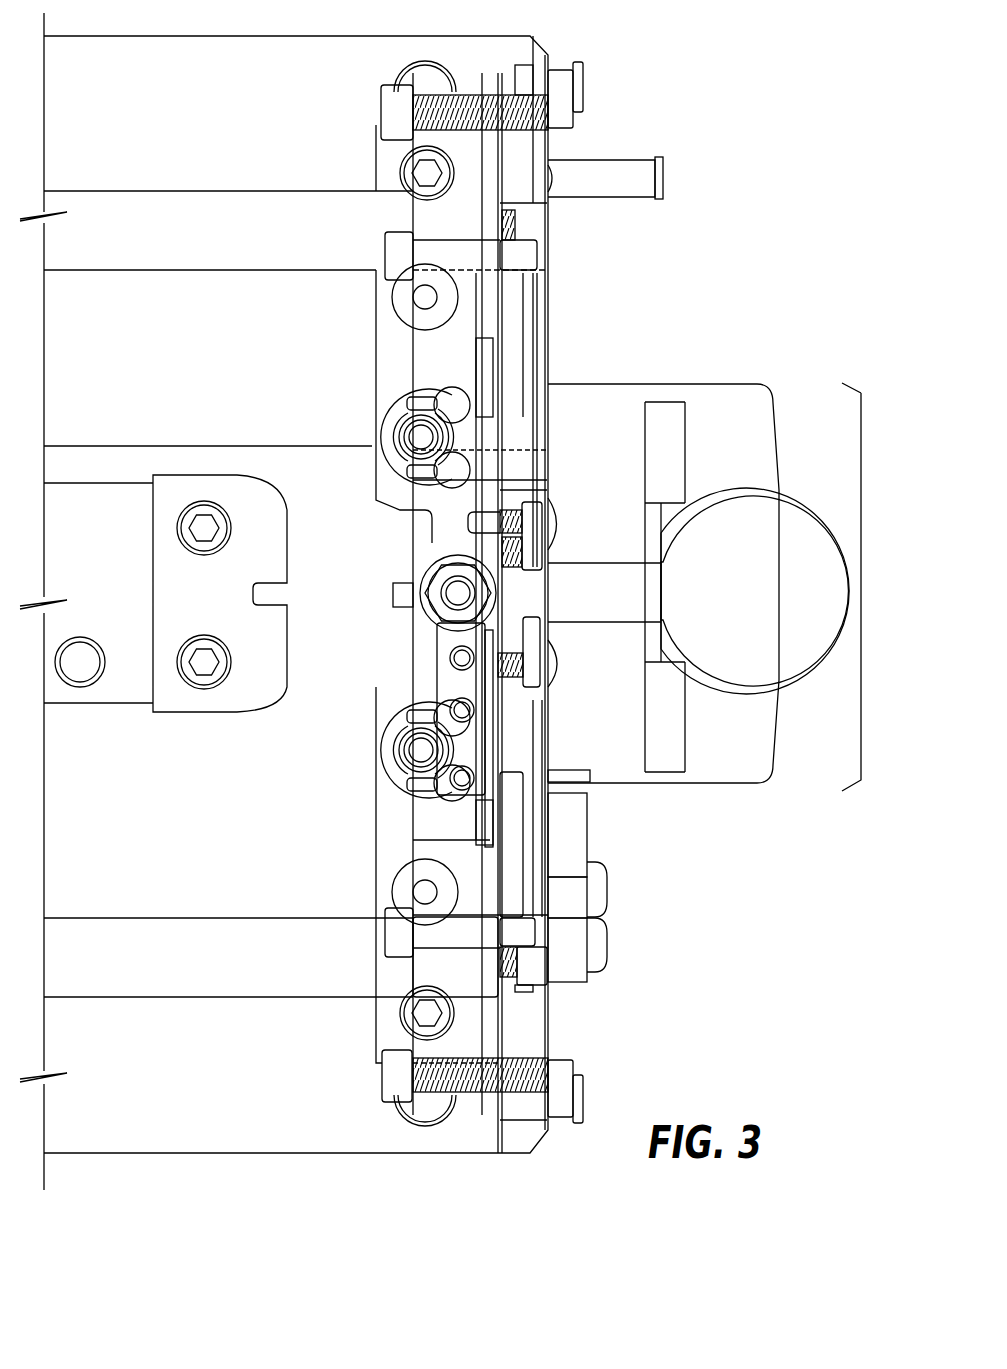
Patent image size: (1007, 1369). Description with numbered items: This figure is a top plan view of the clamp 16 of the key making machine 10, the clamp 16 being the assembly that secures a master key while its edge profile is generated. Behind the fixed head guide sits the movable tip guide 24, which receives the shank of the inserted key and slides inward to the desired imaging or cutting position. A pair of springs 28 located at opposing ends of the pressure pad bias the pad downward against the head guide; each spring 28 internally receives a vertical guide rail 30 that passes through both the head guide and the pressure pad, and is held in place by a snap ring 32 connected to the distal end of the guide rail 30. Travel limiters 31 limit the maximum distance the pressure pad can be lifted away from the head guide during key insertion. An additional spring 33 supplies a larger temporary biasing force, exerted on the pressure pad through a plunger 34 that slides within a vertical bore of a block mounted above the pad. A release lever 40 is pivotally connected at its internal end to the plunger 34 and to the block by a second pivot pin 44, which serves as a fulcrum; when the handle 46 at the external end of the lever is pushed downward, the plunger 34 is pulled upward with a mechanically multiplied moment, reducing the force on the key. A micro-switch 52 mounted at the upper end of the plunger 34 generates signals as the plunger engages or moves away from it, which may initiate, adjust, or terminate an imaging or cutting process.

The key making machine 10 is at (817, 1067).
The clamp 16 is at (864, 578).
The tip guide 24 is at (238, 609).
The springs 28 is at (403, 412).
The guide rail 30 is at (407, 435).
The travel limiters 31 is at (400, 312).
The snap ring 32 is at (378, 445).
The spring 33 is at (432, 557).
The plunger 34 is at (438, 580).
The release lever 40 is at (613, 609).
The second pivot pin 44 is at (527, 662).
The handle 46 is at (768, 613).
The micro-switch 52 is at (440, 683).